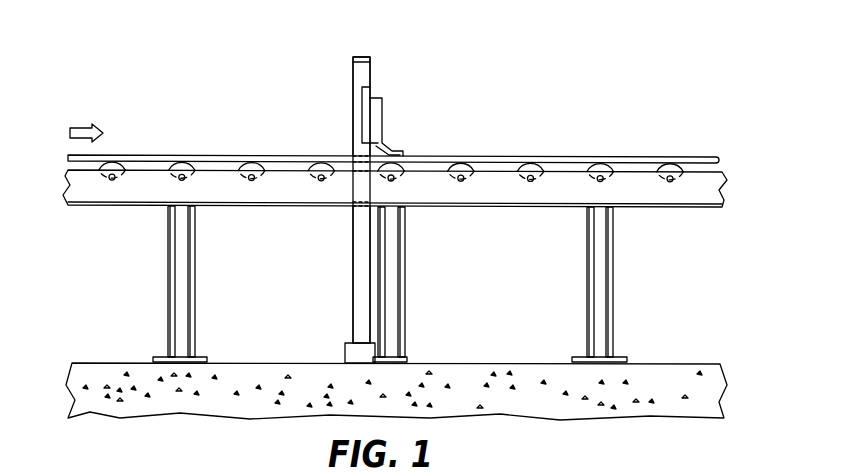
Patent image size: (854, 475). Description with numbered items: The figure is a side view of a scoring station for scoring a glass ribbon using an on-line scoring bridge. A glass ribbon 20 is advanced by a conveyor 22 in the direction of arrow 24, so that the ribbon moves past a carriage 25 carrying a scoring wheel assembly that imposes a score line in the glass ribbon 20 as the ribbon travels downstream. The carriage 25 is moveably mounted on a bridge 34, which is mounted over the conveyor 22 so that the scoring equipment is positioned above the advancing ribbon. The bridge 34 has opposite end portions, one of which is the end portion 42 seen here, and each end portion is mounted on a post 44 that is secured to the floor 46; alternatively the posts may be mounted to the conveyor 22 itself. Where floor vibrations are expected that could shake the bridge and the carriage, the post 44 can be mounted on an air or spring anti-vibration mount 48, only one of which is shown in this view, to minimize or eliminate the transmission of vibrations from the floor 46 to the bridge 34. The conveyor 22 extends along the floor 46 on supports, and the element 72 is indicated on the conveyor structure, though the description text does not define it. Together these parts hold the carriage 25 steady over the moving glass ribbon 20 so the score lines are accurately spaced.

The glass ribbon 20 is at (217, 139).
The conveyor 22 is at (664, 236).
The arrow 24 is at (81, 128).
The carriage 25 is at (403, 107).
The bridge 34 is at (386, 65).
The end portion of the bridge 42 is at (352, 86).
The post 44 is at (353, 257).
The floor 46 is at (452, 363).
The anti-vibration mount 48 is at (345, 357).
The conveyor beam 72 is at (91, 208).